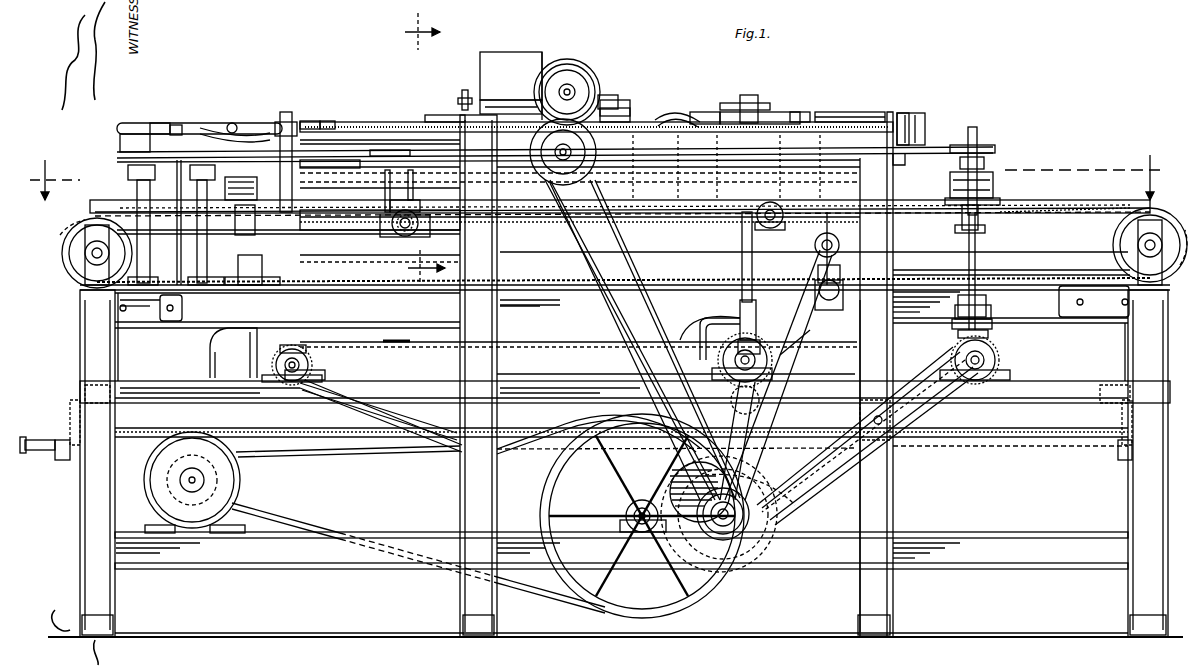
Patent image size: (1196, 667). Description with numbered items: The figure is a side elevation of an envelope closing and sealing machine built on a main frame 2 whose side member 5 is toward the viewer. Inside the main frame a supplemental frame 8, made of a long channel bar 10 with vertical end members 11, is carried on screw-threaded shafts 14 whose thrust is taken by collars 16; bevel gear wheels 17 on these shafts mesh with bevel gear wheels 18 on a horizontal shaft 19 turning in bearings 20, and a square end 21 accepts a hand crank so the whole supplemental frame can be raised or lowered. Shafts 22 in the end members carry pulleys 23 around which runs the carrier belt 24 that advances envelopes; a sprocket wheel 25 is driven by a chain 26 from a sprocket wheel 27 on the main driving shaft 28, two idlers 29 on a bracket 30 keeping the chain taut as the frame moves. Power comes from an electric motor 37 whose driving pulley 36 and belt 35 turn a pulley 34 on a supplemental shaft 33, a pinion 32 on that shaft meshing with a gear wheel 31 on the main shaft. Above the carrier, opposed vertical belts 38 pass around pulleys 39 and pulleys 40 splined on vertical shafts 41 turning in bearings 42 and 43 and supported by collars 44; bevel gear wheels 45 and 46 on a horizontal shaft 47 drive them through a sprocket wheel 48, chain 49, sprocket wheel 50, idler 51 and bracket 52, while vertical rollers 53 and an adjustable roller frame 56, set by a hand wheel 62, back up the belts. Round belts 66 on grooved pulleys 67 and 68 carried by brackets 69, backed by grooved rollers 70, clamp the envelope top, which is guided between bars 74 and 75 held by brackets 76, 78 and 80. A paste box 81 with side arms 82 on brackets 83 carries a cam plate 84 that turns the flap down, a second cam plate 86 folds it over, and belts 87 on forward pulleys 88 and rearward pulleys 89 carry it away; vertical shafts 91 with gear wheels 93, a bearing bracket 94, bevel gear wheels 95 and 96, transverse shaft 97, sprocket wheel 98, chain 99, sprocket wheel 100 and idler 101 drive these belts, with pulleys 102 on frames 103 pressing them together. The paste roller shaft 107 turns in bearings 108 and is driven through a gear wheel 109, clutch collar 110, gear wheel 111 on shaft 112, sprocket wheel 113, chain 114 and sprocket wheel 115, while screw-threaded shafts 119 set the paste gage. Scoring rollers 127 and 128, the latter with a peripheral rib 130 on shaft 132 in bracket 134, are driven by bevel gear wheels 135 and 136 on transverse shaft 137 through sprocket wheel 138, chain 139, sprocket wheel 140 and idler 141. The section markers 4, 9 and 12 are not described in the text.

The main frame 2 is at (92, 558).
The section line 4 is at (595, 177).
The side member 5 is at (83, 500).
The supplemental frame 8 is at (333, 238).
The bracket 9 is at (607, 394).
The channel bar 10 is at (672, 232).
The end members 11 is at (87, 265).
The conveyor frame 12 is at (95, 280).
The screw-threaded shafts 14 is at (100, 355).
The collars 16 is at (621, 550).
The bevel gear wheels 17 is at (115, 432).
The bevel gear wheels 18 is at (80, 450).
The horizontal shaft 19 is at (280, 455).
The bearings 20 is at (62, 460).
The square end 21 is at (30, 450).
The shafts 22 is at (85, 250).
The pulleys 23 is at (70, 262).
The belt 24 is at (1025, 213).
The sprocket wheel 25 is at (1112, 240).
The chain 26 is at (792, 355).
The sprocket wheel 27 is at (710, 530).
The main driving shaft 28 is at (722, 535).
The idlers 29 is at (820, 270).
The bracket 30 is at (835, 300).
The gear wheel 31 is at (662, 472).
The pinion 32 is at (625, 503).
The supplemental shaft 33 is at (640, 525).
The pulley 34 is at (545, 500).
The belt 35 is at (300, 525).
The driving pulley 36 is at (240, 484).
The electric motor 37 is at (158, 500).
The vertical belts 38 is at (996, 183).
The pulleys 39 is at (215, 130).
The pulleys 40 is at (985, 165).
The vertical shafts 41 is at (977, 135).
The bearings 42 is at (994, 330).
The bearings 43 is at (982, 230).
The collars 44 is at (988, 300).
The bevel gear wheels 45 is at (990, 340).
The bevel gear wheels 46 is at (999, 360).
The horizontal shaft 47 is at (975, 380).
The sprocket wheel 48 is at (950, 355).
The chain 49 is at (922, 430).
The sprocket wheel 50 is at (752, 530).
The idler 51 is at (860, 410).
The bracket 52 is at (890, 468).
The vertical rollers 53 is at (380, 230).
The roller frame 56 is at (422, 238).
The hand wheel 62 is at (770, 228).
The round belts 66 is at (117, 156).
The grooved pulleys 67 is at (178, 123).
The grooved pulleys 68 is at (990, 148).
The brackets 69 is at (207, 272).
The grooved rollers 70 is at (382, 148).
The bar 74 is at (135, 123).
The bar 75 is at (368, 122).
The bracket 76 is at (162, 123).
The bracket 78 is at (230, 122).
The bracket 80 is at (275, 272).
The paste box 81 is at (492, 52).
The side arms 82 is at (512, 100).
The brackets 83 is at (540, 60).
The cam plate 84 is at (440, 115).
The cam plate 86 is at (678, 112).
The belts 87 is at (926, 120).
The forward pulleys 88 is at (775, 112).
The rearward pulleys 89 is at (900, 112).
The vertical shafts 91 is at (752, 103).
The gear wheels 93 is at (742, 100).
The bearing bracket 94 is at (692, 318).
The bevel gear wheel 95 is at (765, 340).
The bevel gear wheel 96 is at (718, 318).
The transverse shaft 97 is at (765, 378).
The sprocket wheel 98 is at (765, 405).
The chain 99 is at (755, 440).
The sprocket wheel 100 is at (790, 505).
The idler 101 is at (690, 392).
The pulleys 102 is at (808, 115).
The frames 103 is at (838, 112).
The shaft 107 is at (567, 84).
The bearings 108 is at (630, 100).
The gear wheel 109 is at (605, 95).
The collar 110 is at (585, 70).
The gear wheel 111 is at (615, 108).
The shaft 112 is at (555, 185).
The sprocket wheel 113 is at (597, 195).
The chain 114 is at (598, 310).
The sprocket wheel 115 is at (695, 530).
The screw-threaded shafts 119 is at (465, 90).
The scoring roller 127 is at (310, 121).
The scoring roller 128 is at (281, 120).
The peripheral rib 130 is at (328, 121).
The shaft 132 is at (305, 268).
The bracket 134 is at (225, 346).
The bevel gear wheel 135 is at (306, 348).
The bevel gear wheel 136 is at (280, 358).
The transverse shaft 137 is at (290, 385).
The sprocket wheel 138 is at (320, 362).
The chain 139 is at (395, 350).
The sprocket wheel 140 is at (795, 338).
The idler 141 is at (442, 442).